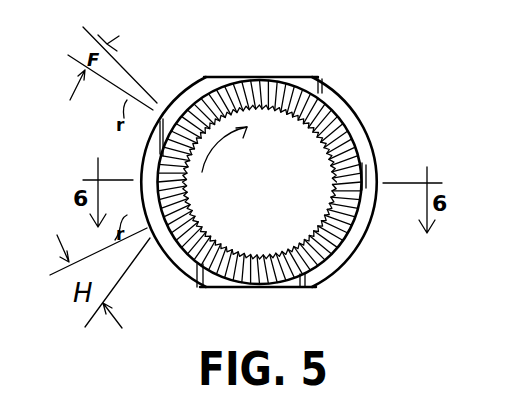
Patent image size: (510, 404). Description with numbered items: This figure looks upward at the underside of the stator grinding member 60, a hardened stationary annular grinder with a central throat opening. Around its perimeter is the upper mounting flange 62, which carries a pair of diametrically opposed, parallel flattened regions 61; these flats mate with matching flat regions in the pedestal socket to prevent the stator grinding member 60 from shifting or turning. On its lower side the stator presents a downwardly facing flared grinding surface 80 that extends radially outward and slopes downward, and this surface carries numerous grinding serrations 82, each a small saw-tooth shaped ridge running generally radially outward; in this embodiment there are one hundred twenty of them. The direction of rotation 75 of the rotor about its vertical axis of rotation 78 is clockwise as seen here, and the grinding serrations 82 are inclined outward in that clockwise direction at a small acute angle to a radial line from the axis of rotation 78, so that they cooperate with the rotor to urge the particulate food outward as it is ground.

The stator grinding member 60 is at (343, 89).
The flattened regions 61 is at (295, 76).
The mounting flange 62 is at (357, 117).
The direction of rotation 75 is at (238, 149).
The axis of rotation 78 is at (265, 183).
The flared grinding surface 80 is at (323, 229).
The grinding serrations 82 is at (340, 154).